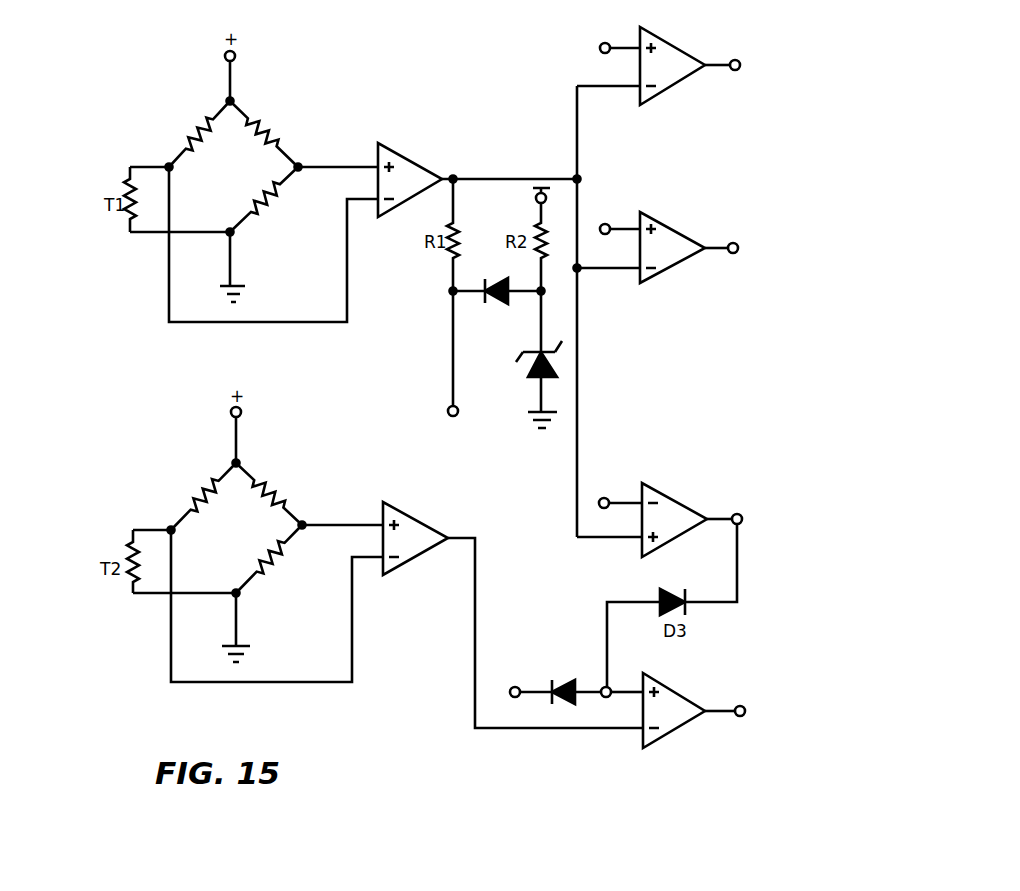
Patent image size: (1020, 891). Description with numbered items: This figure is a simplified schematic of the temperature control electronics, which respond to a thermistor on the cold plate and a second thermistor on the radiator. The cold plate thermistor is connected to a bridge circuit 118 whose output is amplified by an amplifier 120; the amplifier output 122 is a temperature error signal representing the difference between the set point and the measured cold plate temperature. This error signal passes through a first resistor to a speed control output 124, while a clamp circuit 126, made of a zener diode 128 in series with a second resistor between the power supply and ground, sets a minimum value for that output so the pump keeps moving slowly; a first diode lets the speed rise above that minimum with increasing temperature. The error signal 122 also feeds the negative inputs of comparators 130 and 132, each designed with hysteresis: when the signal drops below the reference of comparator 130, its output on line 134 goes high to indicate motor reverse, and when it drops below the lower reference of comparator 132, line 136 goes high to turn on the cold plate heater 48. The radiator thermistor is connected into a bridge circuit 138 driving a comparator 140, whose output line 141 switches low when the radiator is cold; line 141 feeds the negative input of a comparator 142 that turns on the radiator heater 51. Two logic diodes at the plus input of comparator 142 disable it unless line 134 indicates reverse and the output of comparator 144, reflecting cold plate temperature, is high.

The bridge circuit 118 is at (272, 128).
The amplifier 120 is at (419, 154).
The amplifier output 122 is at (457, 174).
The speed control output 124 is at (447, 409).
The clamp circuit 126 is at (548, 292).
The zener diode 128 is at (559, 366).
The comparator 130 is at (688, 50).
The comparator 132 is at (684, 230).
The line 134 is at (730, 72).
The line 136 is at (727, 257).
The bridge circuit 138 is at (273, 489).
The comparator 140 is at (423, 558).
The line 141 is at (471, 690).
The comparator 142 is at (685, 728).
The comparator 144 is at (672, 493).
The cold plate heater 48 is at (783, 251).
The radiator heater 51 is at (777, 637).